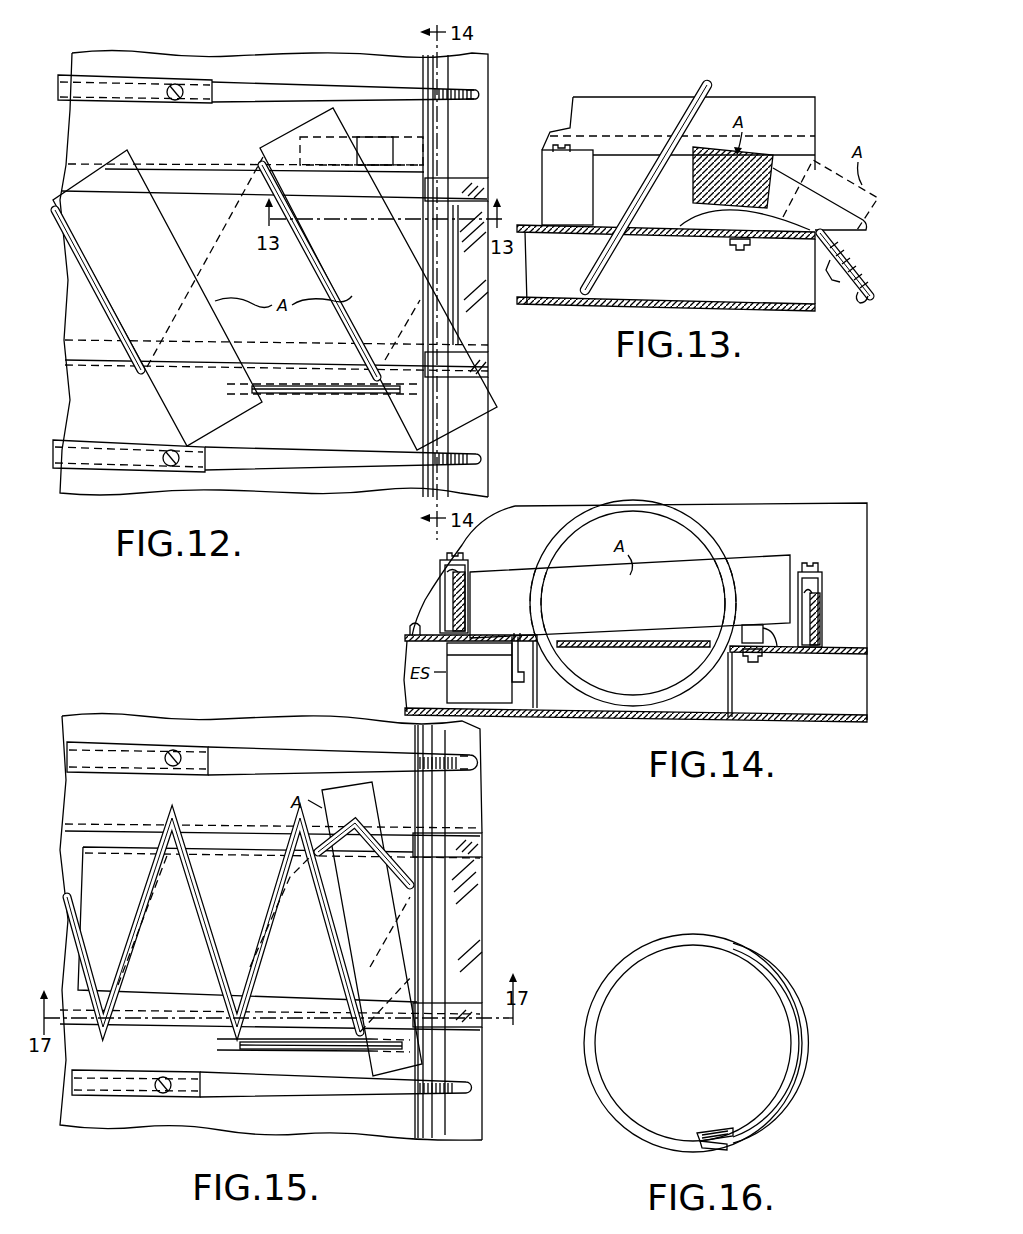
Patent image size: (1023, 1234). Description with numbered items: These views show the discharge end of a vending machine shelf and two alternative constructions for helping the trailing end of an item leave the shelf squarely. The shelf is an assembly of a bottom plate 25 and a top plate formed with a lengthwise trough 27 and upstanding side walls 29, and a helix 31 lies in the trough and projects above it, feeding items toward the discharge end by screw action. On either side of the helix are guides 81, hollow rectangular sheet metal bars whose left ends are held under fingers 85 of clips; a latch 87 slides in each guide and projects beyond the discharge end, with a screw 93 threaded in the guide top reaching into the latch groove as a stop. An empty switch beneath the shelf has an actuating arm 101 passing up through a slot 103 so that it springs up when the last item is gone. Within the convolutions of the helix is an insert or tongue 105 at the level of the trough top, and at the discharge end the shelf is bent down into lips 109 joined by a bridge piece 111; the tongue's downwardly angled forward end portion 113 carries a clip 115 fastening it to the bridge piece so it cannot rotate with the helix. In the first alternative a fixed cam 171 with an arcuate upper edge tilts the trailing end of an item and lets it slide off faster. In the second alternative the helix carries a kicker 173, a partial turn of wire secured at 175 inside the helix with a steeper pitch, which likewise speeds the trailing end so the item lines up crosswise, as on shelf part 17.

In FIG. 12, the housing / frame member 17 is at (152, 48).
In FIG. 13, the housing / frame member 17 is at (798, 316).
In FIG. 14, the housing / frame member 17 is at (394, 644).
In FIG. 15, the housing / frame member 17 is at (232, 715).
In FIG. 13, the bottom plate 25 is at (746, 309).
In FIG. 14, the bottom plate 25 is at (784, 722).
In FIG. 12, the trough 27 is at (268, 363).
In FIG. 13, the trough 27 is at (686, 299).
In FIG. 14, the trough 27 is at (527, 706).
In FIG. 15, the trough 27 is at (206, 830).
In FIG. 13, the side wall 29 is at (757, 97).
In FIG. 12, the helix 31 is at (318, 266).
In FIG. 13, the helix 31 is at (680, 118).
In FIG. 14, the helix 31 is at (700, 524).
In FIG. 15, the helix 31 is at (322, 930).
In FIG. 16, the helix 31 is at (640, 950).
In FIG. 12, the guide 81 is at (135, 82).
In FIG. 13, the guide 81 is at (592, 176).
In FIG. 14, the guide 81 is at (440, 580).
In FIG. 15, the guide 81 is at (128, 755).
In FIG. 14, the finger 85 is at (409, 627).
In FIG. 12, the latch 87 is at (480, 95).
In FIG. 13, the latch 87 is at (850, 238).
In FIG. 14, the latch 87 is at (452, 615).
In FIG. 15, the latch 87 is at (412, 762).
In FIG. 12, the screw 93 is at (178, 84).
In FIG. 13, the screw 93 is at (569, 147).
In FIG. 14, the screw 93 is at (460, 556).
In FIG. 15, the screw 93 is at (176, 752).
In FIG. 12, the actuating arm 101 is at (325, 393).
In FIG. 14, the actuating arm 101 is at (520, 633).
In FIG. 15, the actuating arm 101 is at (322, 1050).
In FIG. 12, the slot 103 is at (290, 390).
In FIG. 14, the slot 103 is at (510, 660).
In FIG. 15, the slot 103 is at (270, 1048).
In FIG. 12, the insert or tongue 105 is at (196, 200).
In FIG. 13, the insert or tongue 105 is at (553, 238).
In FIG. 14, the insert or tongue 105 is at (625, 645).
In FIG. 15, the insert or tongue 105 is at (128, 850).
In FIG. 12, the lip 109 is at (478, 143).
In FIG. 15, the lip 109 is at (470, 785).
In FIG. 12, the bridge piece 111 is at (482, 178).
In FIG. 13, the bridge piece 111 is at (862, 304).
In FIG. 15, the bridge piece 111 is at (478, 846).
In FIG. 12, the forward end portion 113 is at (484, 312).
In FIG. 13, the forward end portion 113 is at (850, 262).
In FIG. 15, the forward end portion 113 is at (476, 895).
In FIG. 13, the clip 115 is at (838, 284).
In FIG. 12, the cam 171 is at (386, 148).
In FIG. 13, the cam 171 is at (718, 228).
In FIG. 14, the cam 171 is at (770, 648).
In FIG. 15, the kicker 173 is at (375, 840).
In FIG. 16, the kicker 173 is at (756, 1122).
In FIG. 15, the securing point 175 is at (266, 897).
In FIG. 16, the securing point 175 is at (724, 1146).